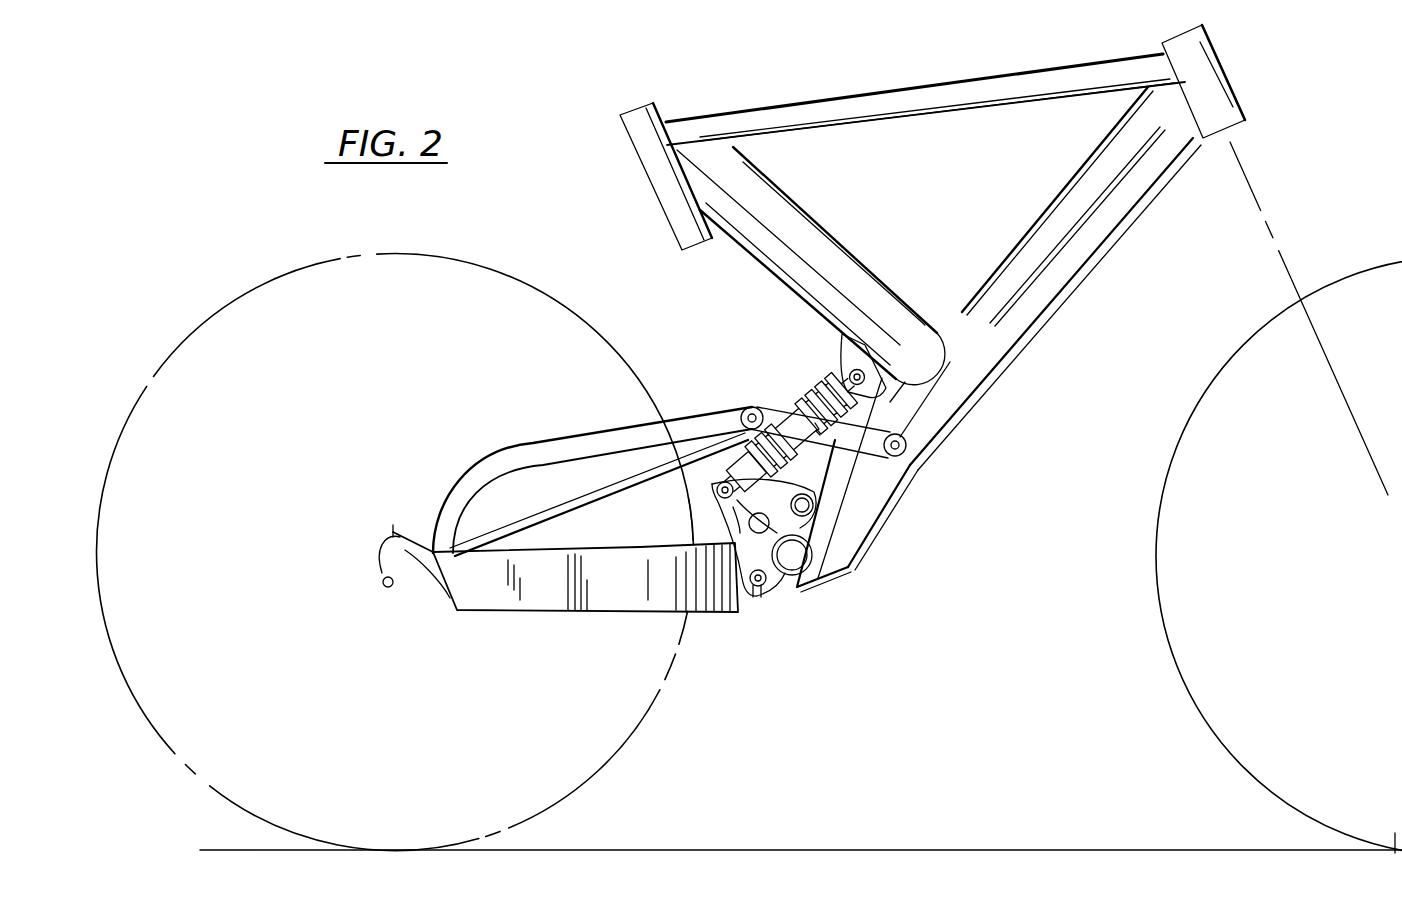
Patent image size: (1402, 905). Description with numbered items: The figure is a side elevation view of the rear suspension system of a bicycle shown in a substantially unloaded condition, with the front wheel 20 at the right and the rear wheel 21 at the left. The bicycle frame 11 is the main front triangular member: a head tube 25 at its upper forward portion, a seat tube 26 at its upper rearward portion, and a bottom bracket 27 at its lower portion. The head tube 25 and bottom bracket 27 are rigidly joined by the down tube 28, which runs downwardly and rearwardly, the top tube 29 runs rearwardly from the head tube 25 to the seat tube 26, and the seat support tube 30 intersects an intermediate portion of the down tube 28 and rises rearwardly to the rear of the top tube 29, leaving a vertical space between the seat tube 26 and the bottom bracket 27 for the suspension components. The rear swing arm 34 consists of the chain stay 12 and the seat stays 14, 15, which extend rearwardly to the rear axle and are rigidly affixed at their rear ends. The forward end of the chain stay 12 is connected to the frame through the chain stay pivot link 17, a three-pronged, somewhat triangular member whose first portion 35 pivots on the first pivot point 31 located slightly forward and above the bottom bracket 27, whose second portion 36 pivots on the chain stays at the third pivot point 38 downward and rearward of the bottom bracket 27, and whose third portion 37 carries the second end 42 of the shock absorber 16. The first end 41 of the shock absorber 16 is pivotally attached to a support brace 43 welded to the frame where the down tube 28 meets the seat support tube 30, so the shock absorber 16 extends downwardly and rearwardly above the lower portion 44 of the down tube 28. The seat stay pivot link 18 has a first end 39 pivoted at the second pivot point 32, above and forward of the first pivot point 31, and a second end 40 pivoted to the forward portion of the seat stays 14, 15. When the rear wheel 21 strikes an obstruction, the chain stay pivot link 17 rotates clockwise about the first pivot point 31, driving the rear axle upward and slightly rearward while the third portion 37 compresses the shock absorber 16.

The bicycle frame 11 is at (975, 301).
The right chain stay 12 is at (537, 608).
The right seat stay 14 is at (575, 443).
The left seat stay 15 is at (520, 506).
The shock absorber 16 is at (819, 377).
The chain stay pivot link 17 is at (818, 499).
The seat stay pivot link 18 is at (864, 449).
The front wheel 20 is at (1255, 343).
The rear wheel 21 is at (313, 261).
The head tube 25 is at (1240, 111).
The seat tube 26 is at (660, 188).
The bottom bracket 27 is at (786, 580).
The down tube 28 is at (1093, 254).
The top tube 29 is at (983, 49).
The seat support tube 30 is at (806, 224).
The first pivot point 31 is at (803, 513).
The second pivot point 32 is at (907, 445).
The rear swing arm 34 is at (592, 466).
The first portion 35 is at (813, 511).
The second portion 36 is at (765, 598).
The third portion 37 is at (707, 492).
The third pivot point 38 is at (756, 592).
The first end 39 is at (896, 457).
The second end 40 is at (767, 408).
The first end 41 is at (846, 371).
The second end 42 is at (696, 509).
The support brace 43 is at (942, 396).
The lower portion 44 is at (818, 586).